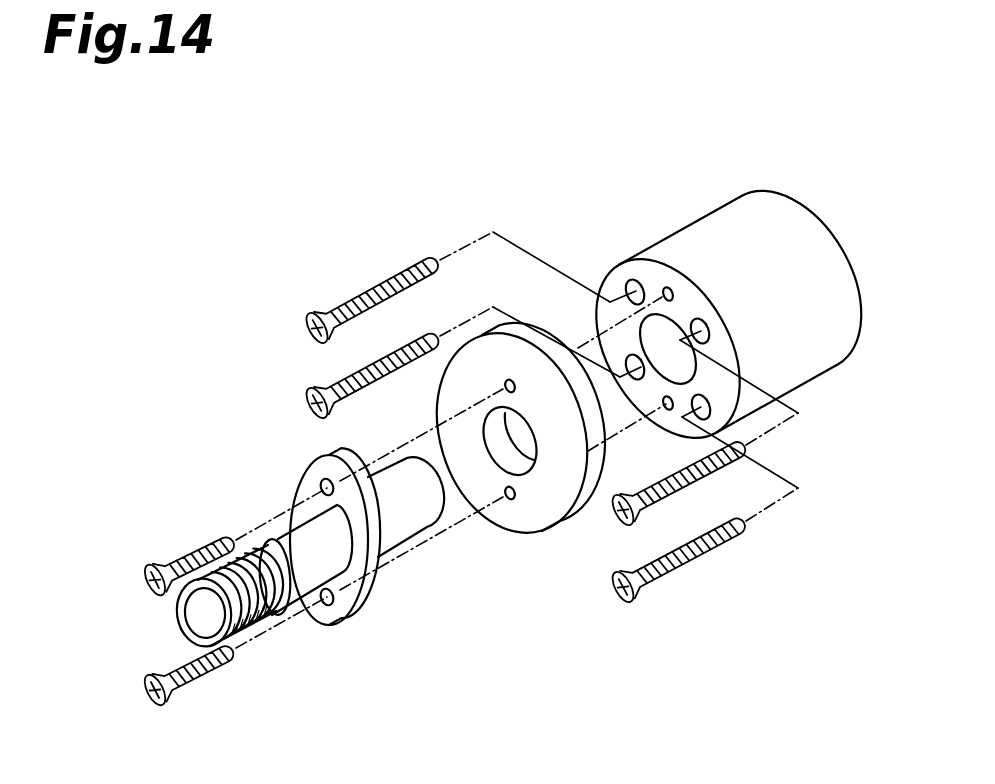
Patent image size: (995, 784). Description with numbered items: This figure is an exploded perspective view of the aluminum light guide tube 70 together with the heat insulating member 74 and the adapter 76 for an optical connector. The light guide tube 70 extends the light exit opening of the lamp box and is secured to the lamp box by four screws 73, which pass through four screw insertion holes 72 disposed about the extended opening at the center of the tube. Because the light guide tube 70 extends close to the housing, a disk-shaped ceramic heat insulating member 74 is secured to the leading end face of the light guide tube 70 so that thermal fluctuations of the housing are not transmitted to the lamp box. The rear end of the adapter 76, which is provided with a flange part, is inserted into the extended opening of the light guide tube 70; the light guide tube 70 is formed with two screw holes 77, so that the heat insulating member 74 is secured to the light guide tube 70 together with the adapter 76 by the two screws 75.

The light guide tube 70 is at (727, 221).
The screw insertion holes 72 is at (718, 407).
The screws 73 is at (372, 290).
The heat insulating member 74 is at (547, 524).
The screws 75 is at (183, 560).
The adapter 76 is at (310, 582).
The screw holes 77 is at (667, 290).